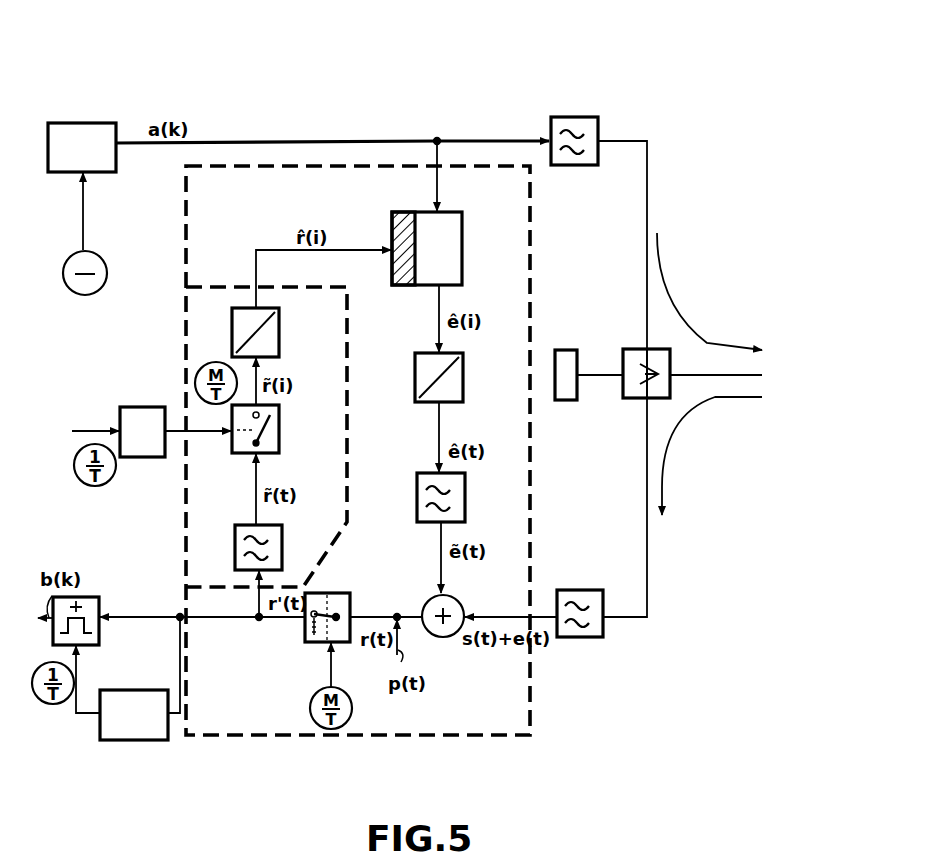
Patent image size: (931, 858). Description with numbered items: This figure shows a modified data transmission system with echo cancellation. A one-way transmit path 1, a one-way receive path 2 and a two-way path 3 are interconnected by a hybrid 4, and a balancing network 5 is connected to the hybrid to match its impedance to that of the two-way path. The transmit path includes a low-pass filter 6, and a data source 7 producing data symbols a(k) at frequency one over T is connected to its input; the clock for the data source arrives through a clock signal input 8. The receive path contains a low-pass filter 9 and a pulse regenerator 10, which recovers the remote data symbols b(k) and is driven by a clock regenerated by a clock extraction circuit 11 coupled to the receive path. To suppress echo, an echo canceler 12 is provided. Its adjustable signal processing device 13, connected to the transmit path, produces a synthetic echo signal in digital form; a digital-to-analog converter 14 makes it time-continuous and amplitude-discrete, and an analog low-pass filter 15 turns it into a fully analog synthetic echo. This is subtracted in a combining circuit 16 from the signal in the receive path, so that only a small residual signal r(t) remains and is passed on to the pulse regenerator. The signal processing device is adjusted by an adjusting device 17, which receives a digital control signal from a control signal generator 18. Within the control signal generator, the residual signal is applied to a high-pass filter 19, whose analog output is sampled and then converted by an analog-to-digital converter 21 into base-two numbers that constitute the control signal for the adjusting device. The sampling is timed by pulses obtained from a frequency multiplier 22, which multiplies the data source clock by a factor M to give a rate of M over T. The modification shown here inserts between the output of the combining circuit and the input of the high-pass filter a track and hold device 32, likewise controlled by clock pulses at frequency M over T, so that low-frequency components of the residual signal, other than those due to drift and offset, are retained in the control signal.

The one-way transmit path 1 is at (647, 185).
The one-way receive path 2 is at (647, 570).
The two-way path 3 is at (745, 373).
The hybrid 4 is at (640, 348).
The balancing network 5 is at (566, 400).
The low-pass filter 6 is at (584, 117).
The data source 7 is at (100, 122).
The clock signal input 8 is at (84, 177).
The low-pass filter 9 is at (582, 637).
The pulse regenerator 10 is at (76, 596).
The clock extraction circuit 11 is at (152, 740).
The echo canceler 12 is at (530, 262).
The adjustable signal processing device 13 is at (462, 252).
The digital-to-analog converter 14 is at (463, 380).
The analog low-pass filter 15 is at (465, 508).
The combining circuit 16 is at (458, 602).
The adjusting device 17 is at (392, 223).
The control signal generator 18 is at (233, 283).
The high-pass filter 19 is at (282, 548).
The analog-to-digital converter 21 is at (280, 328).
The frequency multiplier 22 is at (142, 405).
The track and hold device 32 is at (322, 592).